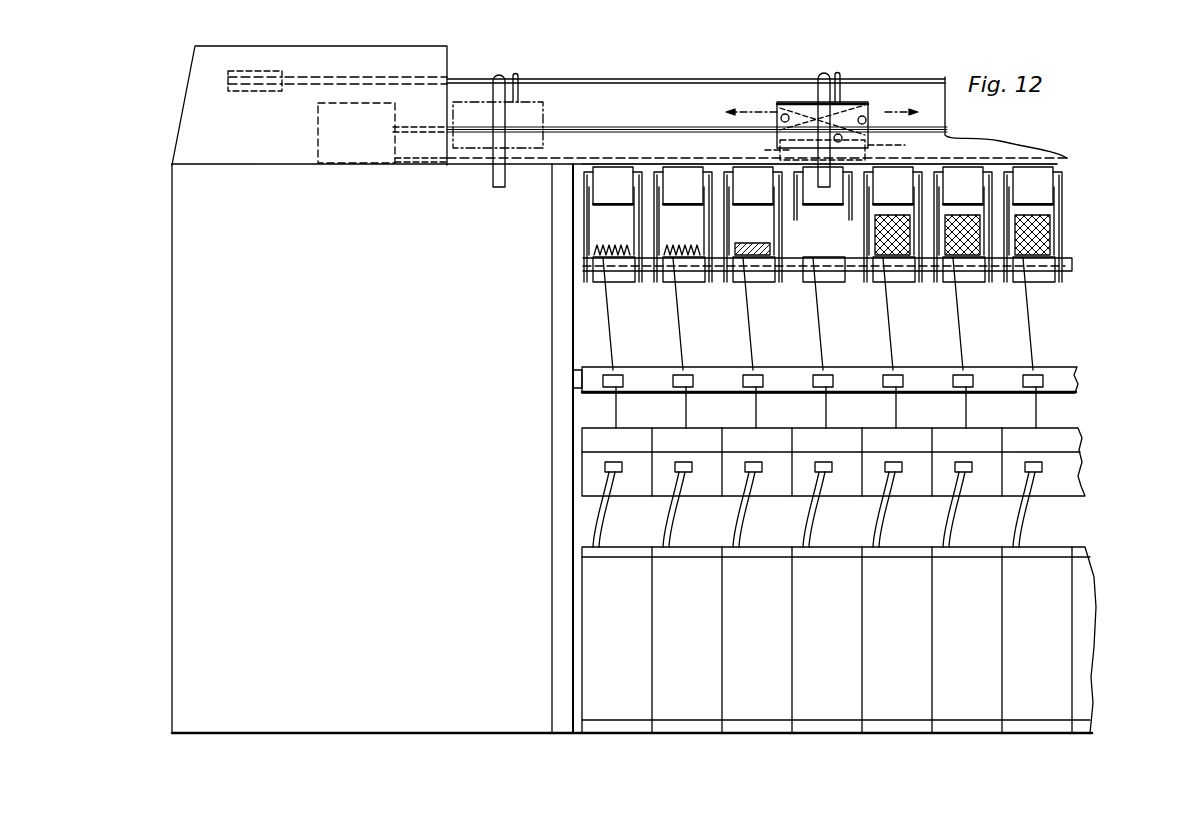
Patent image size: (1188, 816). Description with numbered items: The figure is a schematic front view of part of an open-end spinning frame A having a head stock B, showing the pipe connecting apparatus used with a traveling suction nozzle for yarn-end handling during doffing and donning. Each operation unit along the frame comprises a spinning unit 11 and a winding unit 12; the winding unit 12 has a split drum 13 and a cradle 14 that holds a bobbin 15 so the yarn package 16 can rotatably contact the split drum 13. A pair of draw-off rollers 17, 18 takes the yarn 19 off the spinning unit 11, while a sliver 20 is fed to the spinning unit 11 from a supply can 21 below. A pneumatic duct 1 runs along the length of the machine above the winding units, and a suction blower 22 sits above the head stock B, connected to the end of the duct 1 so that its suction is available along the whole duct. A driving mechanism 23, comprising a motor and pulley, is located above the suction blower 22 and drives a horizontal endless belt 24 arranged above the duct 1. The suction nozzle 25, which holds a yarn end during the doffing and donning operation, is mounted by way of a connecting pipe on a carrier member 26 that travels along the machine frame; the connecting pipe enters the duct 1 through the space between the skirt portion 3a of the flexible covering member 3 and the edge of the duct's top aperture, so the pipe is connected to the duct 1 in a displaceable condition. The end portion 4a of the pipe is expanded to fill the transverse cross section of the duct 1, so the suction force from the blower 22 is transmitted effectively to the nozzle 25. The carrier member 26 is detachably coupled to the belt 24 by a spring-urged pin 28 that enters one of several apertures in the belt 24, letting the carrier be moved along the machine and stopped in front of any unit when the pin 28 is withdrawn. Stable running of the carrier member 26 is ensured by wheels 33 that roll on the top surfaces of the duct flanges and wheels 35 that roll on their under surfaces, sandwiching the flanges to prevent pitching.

The pneumatic duct 1 is at (641, 142).
The flexible covering member 3 is at (852, 103).
The skirt portion 3a is at (806, 112).
The end portion of the pipe 4a is at (791, 107).
The spinning unit 11 is at (1060, 472).
The winding unit 12 is at (1050, 205).
The split drum 13 is at (1038, 272).
The cradle 14 is at (1056, 212).
The bobbin 15 is at (1056, 235).
The yarn package 16 is at (1050, 250).
The draw-off roller 17 is at (1063, 371).
The draw-off roller 18 is at (1042, 387).
The yarn 19 is at (1032, 333).
The sliver 20 is at (1022, 523).
The supply can 21 is at (1057, 602).
The suction blower 22 is at (346, 112).
The driving mechanism 23 is at (236, 93).
The endless belt 24 is at (633, 78).
The suction nozzle 25 is at (495, 185).
The carrier member 26 is at (543, 103).
The pin 28 is at (518, 80).
The wheels 33 is at (785, 102).
The wheels 35 is at (877, 146).
The open-end spinning frame A is at (1097, 322).
The head stock B is at (178, 378).